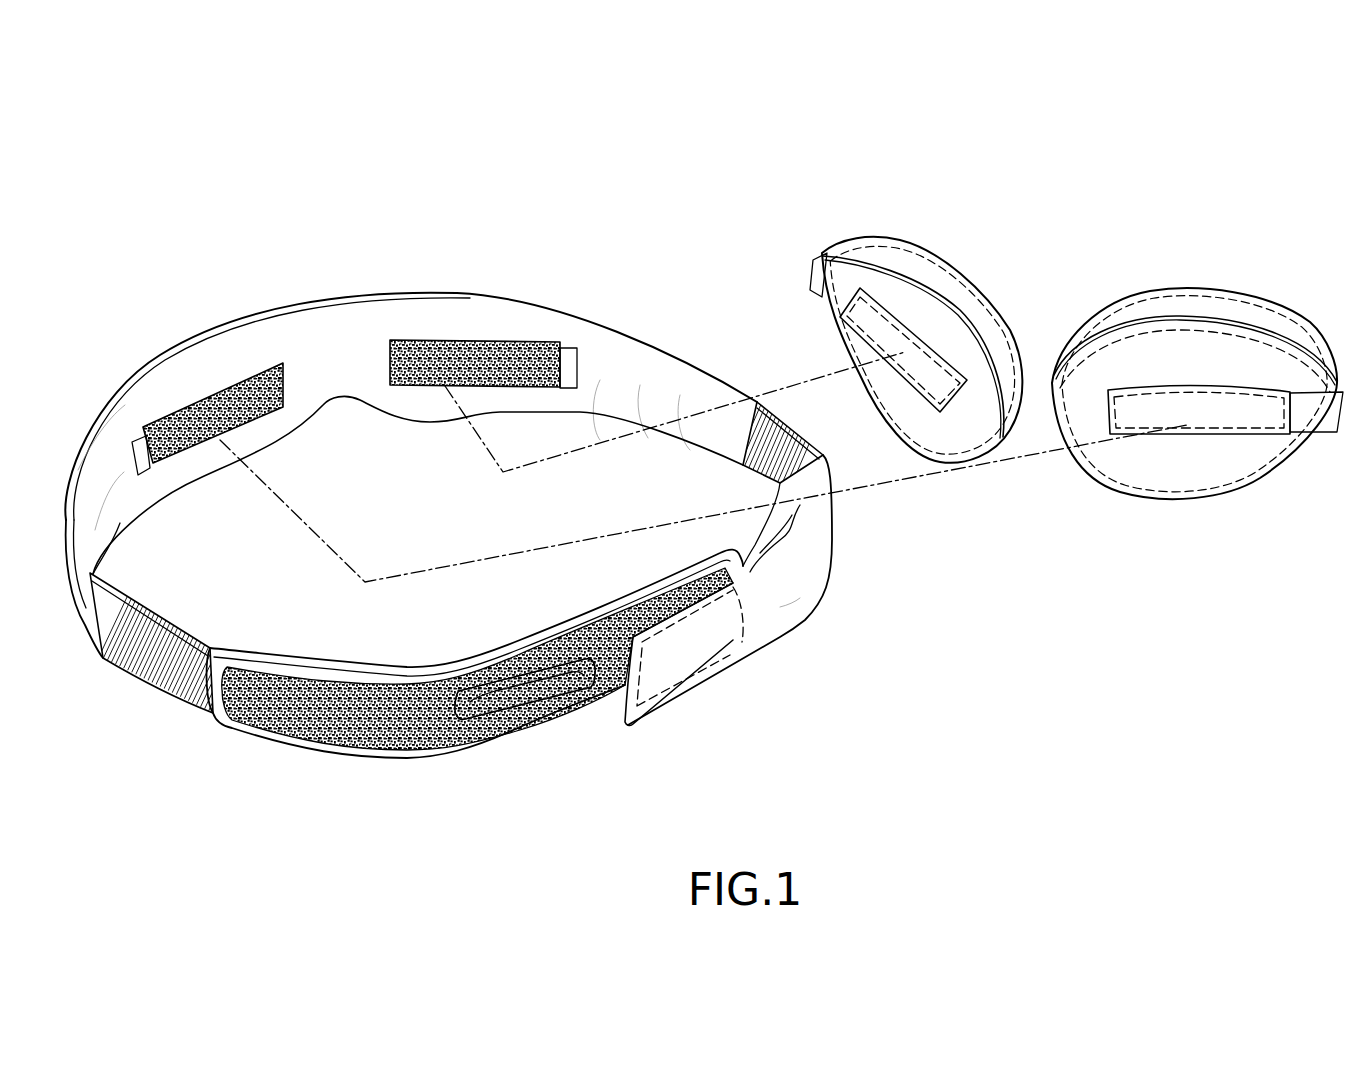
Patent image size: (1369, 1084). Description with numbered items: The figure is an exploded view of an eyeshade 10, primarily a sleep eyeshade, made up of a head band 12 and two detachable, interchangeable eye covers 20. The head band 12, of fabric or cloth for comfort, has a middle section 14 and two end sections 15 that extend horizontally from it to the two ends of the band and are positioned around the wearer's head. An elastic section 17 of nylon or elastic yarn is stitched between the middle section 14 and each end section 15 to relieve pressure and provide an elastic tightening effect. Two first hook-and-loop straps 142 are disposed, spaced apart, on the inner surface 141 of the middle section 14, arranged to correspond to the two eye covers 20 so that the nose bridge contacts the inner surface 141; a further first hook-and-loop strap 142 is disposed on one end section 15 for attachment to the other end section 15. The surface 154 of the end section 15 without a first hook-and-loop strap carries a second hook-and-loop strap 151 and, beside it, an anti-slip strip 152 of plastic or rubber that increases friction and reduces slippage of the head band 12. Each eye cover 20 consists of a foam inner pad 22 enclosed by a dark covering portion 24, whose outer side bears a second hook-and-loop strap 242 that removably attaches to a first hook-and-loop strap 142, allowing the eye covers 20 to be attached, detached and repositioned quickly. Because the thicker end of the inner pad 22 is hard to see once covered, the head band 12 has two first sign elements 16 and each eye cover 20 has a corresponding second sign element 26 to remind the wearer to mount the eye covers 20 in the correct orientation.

The eyeshade 10 is at (686, 118).
The head band 12 is at (428, 256).
The middle section 14 is at (310, 310).
The inner surface 141 is at (330, 393).
The first hook-and-loop strap 142 is at (183, 403).
The end section 15 is at (428, 663).
The second hook-and-loop strap 151 is at (370, 730).
The anti-slip strip 152 is at (530, 727).
The surface 154 is at (297, 677).
The first sign element 16 is at (137, 443).
The elastic section 17 is at (153, 682).
The eye cover 20 is at (1035, 334).
The inner pad 22 is at (930, 263).
The covering portion 24 is at (977, 282).
The second hook-and-loop strap 242 is at (867, 330).
The second sign element 26 is at (820, 273).